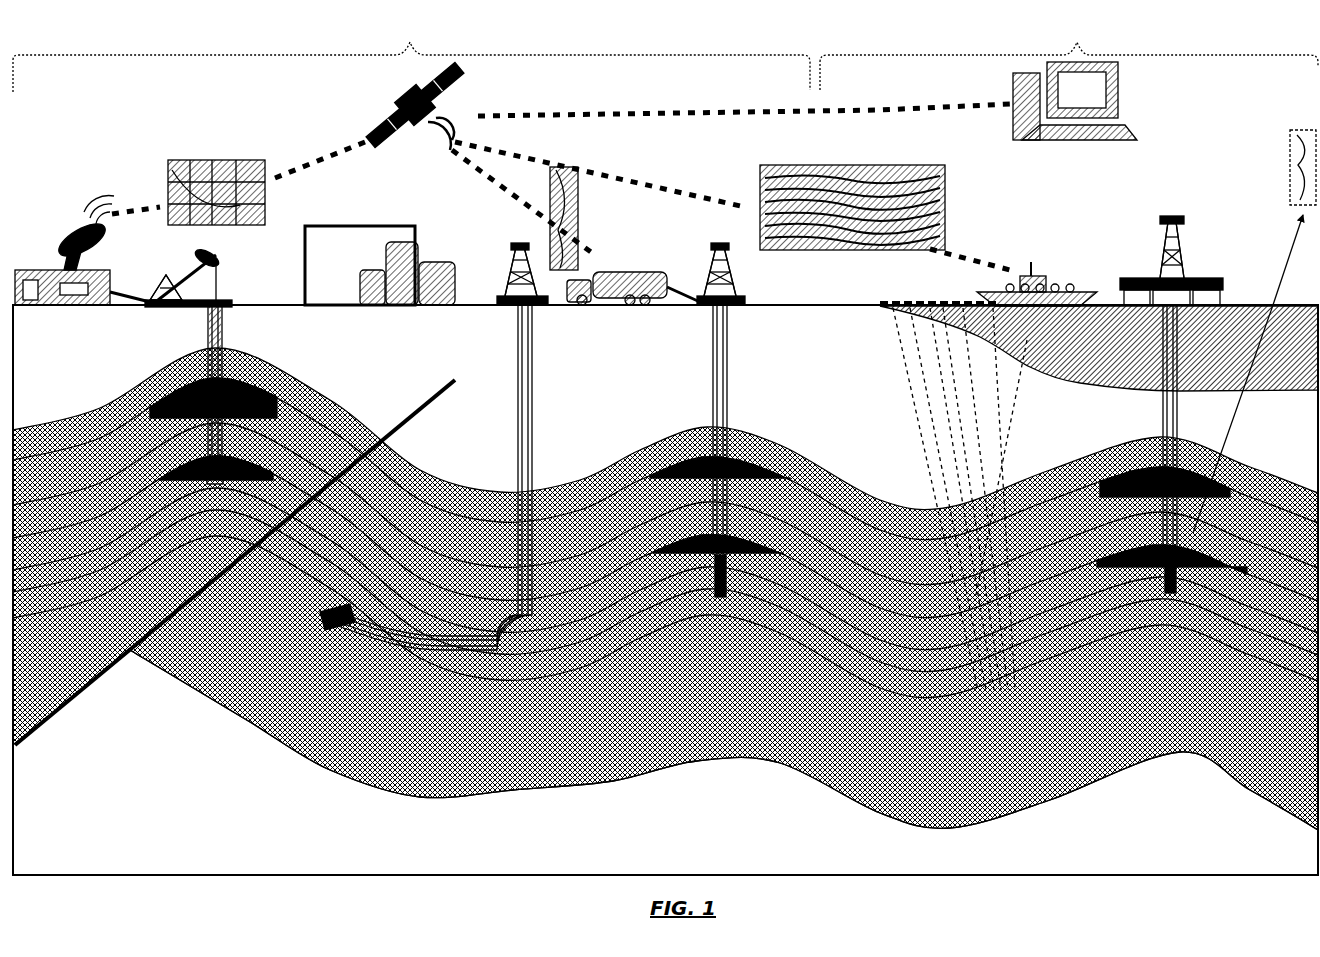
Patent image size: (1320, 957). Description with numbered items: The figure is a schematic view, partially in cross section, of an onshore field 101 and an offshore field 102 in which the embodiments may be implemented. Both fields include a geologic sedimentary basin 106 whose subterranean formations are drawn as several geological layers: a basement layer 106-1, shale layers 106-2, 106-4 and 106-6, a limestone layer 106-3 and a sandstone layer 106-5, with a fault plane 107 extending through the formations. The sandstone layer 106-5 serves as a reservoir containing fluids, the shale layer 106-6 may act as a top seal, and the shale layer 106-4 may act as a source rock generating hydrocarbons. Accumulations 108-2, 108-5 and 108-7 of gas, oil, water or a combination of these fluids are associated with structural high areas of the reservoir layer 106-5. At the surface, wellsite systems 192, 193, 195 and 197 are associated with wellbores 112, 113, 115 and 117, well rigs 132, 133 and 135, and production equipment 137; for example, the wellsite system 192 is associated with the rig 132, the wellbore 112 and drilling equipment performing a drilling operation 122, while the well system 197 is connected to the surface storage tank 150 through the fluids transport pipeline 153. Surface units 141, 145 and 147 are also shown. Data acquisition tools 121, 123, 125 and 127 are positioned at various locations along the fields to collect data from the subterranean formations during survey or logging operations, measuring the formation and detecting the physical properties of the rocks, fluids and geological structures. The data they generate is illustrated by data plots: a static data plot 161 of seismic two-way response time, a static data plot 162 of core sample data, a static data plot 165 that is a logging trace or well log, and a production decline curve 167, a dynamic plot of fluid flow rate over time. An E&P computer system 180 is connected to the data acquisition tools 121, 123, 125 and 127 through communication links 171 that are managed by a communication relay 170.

The onshore field 101 is at (411, 49).
The offshore field 102 is at (1069, 48).
The geologic sedimentary basin 106 is at (665, 593).
The basement layer 106-1 is at (724, 740).
The shale layer 106-2 is at (665, 617).
The limestone layer 106-3 is at (665, 591).
The shale layer 106-4 is at (665, 569).
The sandstone layer 106-5 is at (665, 537).
The shale layer 106-6 is at (665, 481).
The fault plane 107 is at (410, 418).
The accumulation 108-2 is at (1143, 465).
The accumulation 108-5 is at (748, 458).
The accumulation 108-7 is at (270, 388).
The wellbore 112 is at (1160, 400).
The wellbore 113 is at (538, 353).
The wellbore 115 is at (733, 358).
The wellbore 117 is at (228, 332).
The data acquisition tool 121 is at (935, 303).
The drilling operation 122 is at (1162, 585).
The data acquisition tool 123 is at (322, 620).
The data acquisition tool 125 is at (721, 600).
The data acquisition tool 127 is at (208, 462).
The rig 132 is at (1190, 253).
The well rig 133 is at (510, 262).
The well rig 135 is at (736, 280).
The production equipment 137 is at (220, 262).
The surface unit 141 is at (1050, 270).
The surface unit 145 is at (615, 264).
The surface unit 147 is at (25, 262).
The surface storage tank 150 is at (422, 236).
The fluids transport pipeline 153 is at (325, 222).
The static data plot 161 is at (882, 165).
The static data plot 162 is at (1283, 145).
The static data plot 165 is at (580, 165).
The production decline curve 167 is at (205, 156).
The communication relay 170 is at (398, 92).
The communication link 171 is at (708, 100).
The E&P computer system 180 is at (1127, 110).
The wellsite system 192 is at (1170, 232).
The wellsite system 193 is at (522, 259).
The wellsite system 195 is at (721, 261).
The well system 197 is at (188, 267).